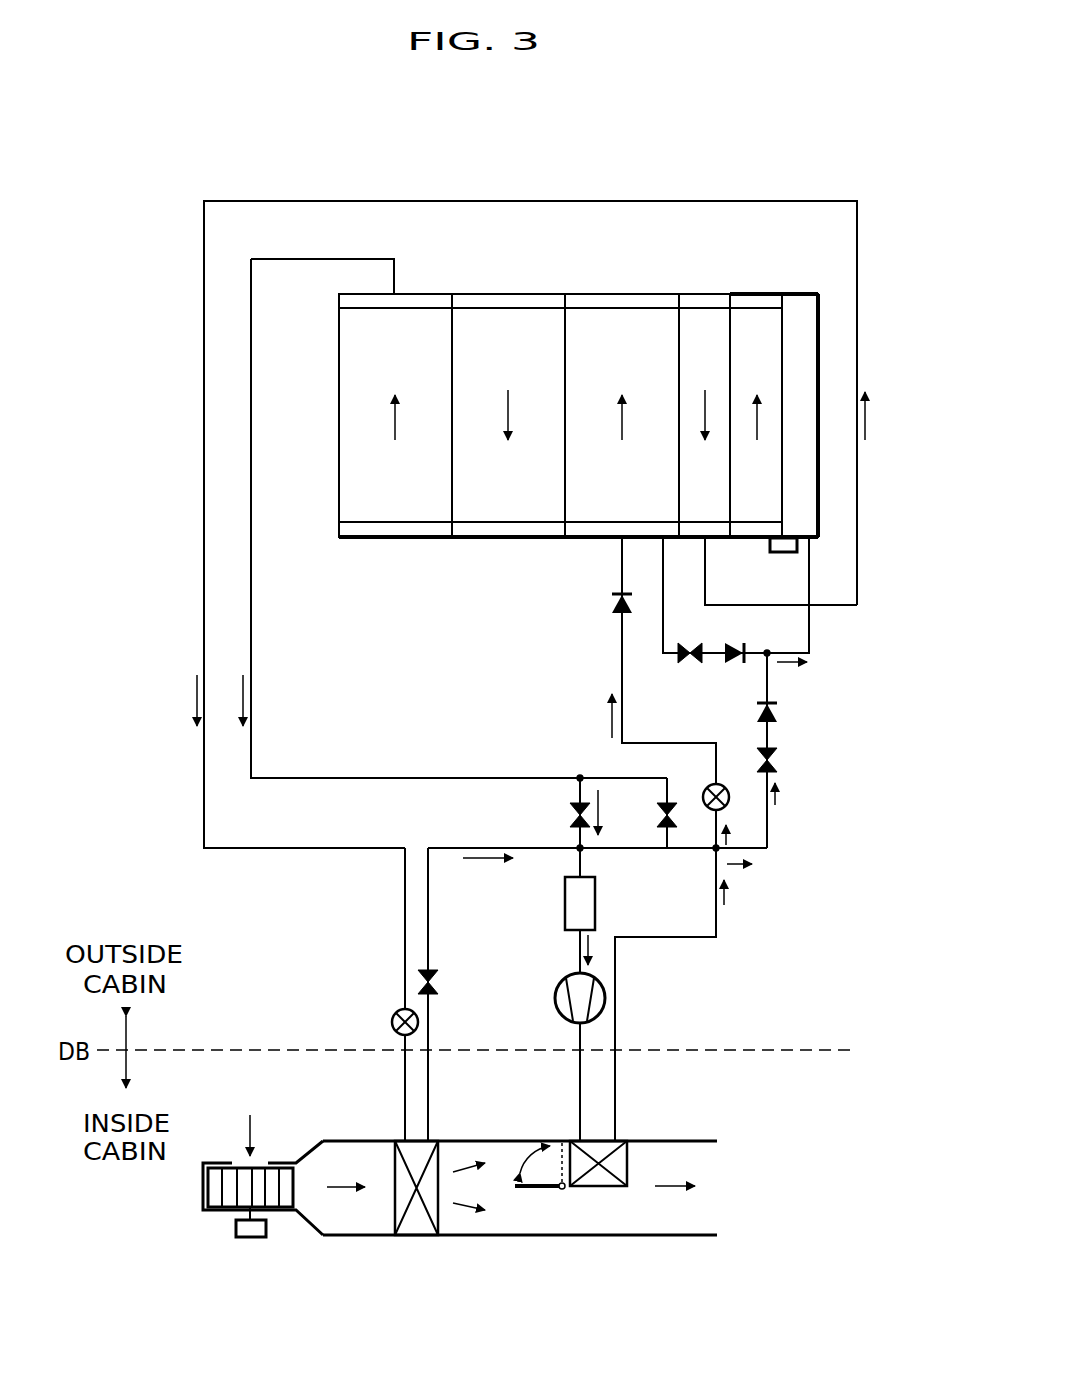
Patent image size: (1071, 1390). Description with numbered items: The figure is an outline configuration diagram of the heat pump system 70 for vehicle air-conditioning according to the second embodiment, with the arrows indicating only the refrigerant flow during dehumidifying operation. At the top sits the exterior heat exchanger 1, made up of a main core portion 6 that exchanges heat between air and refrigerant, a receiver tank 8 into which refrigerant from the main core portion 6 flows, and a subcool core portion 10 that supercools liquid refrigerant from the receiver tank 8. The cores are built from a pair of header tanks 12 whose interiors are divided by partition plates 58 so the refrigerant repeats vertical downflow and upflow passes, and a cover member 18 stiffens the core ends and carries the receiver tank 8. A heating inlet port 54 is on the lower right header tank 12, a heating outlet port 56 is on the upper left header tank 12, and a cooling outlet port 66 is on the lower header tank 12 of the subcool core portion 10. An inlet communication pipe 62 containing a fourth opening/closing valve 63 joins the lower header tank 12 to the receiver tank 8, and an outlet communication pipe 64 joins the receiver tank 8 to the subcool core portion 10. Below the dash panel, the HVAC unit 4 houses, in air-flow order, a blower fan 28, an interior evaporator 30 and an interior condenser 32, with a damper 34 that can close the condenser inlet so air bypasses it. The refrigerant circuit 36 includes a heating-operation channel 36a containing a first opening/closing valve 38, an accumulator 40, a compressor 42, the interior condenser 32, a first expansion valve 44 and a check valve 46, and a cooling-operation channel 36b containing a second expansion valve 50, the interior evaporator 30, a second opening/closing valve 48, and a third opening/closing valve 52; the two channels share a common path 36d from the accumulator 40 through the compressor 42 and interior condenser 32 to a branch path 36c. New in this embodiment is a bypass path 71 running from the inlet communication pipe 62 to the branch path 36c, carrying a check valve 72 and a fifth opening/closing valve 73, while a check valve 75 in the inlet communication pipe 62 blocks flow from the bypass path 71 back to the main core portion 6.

The exterior heat exchanger 1 is at (650, 292).
The HVAC unit 4 is at (668, 1239).
The main core portion 6 is at (540, 345).
The receiver tank 8 is at (806, 312).
The subcool core portion 10 is at (752, 340).
The header tank 12 is at (596, 302).
The cover member 18 is at (784, 345).
The blower fan 28 is at (214, 1207).
The interior evaporator 30 is at (416, 1238).
The interior condenser 32 is at (599, 1190).
The damper 34 is at (532, 1190).
The refrigerant circuit 36 is at (720, 922).
The heating-operation channel 36a is at (620, 686).
The cooling-operation channel 36b is at (204, 566).
The branch path 36c is at (712, 854).
The common path 36d is at (672, 940).
The first opening/closing valve 38 is at (570, 810).
The accumulator 40 is at (567, 896).
The compressor 42 is at (560, 985).
The first expansion valve 44 is at (726, 786).
The check valve 46 is at (620, 618).
The second opening/closing valve 48 is at (440, 985).
The second expansion valve 50 is at (398, 1010).
The third opening/closing valve 52 is at (665, 836).
The heating inlet port 54 is at (622, 540).
The heating outlet port 56 is at (394, 292).
The partition plate 58 is at (452, 348).
The inlet communication pipe 62 is at (811, 626).
The fourth opening/closing valve 63 is at (690, 664).
The outlet communication pipe 64 is at (788, 554).
The cooling outlet port 66 is at (708, 541).
The heat pump system 70 is at (714, 187).
The bypass path 71 is at (770, 838).
The check valve 72 is at (780, 713).
The fifth opening/closing valve 73 is at (780, 760).
The check valve 75 is at (735, 664).